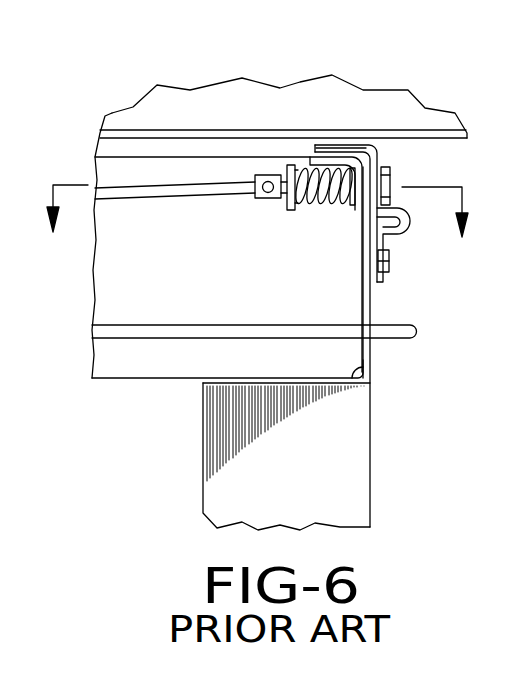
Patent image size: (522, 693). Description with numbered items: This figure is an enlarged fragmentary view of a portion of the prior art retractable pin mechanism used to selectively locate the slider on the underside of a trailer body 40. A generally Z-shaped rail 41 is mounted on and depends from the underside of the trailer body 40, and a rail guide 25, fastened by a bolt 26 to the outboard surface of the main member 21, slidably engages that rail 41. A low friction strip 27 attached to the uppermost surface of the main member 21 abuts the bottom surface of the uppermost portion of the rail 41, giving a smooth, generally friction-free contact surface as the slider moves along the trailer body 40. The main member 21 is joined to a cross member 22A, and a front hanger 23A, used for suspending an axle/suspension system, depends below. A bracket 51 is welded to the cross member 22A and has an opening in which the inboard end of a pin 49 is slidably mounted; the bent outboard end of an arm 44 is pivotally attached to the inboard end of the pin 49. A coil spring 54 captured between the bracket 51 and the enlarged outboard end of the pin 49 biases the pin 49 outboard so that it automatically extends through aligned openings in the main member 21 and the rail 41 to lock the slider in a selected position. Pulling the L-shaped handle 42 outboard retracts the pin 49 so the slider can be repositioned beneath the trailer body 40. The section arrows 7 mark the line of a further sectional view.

The trailer body 40 is at (390, 68).
The rail 41 is at (379, 156).
The low friction strip 27 is at (338, 147).
The pin 49 is at (388, 178).
The rail guide 25 is at (411, 223).
The bolt 26 is at (388, 262).
The arm 44 is at (150, 193).
The bracket 51 is at (287, 208).
The coil spring 54 is at (334, 208).
The handle 42 is at (411, 333).
The main member 21 is at (378, 369).
The cross member 22A is at (137, 388).
The front hanger 23A is at (378, 469).
The section line 7 is at (258, 225).